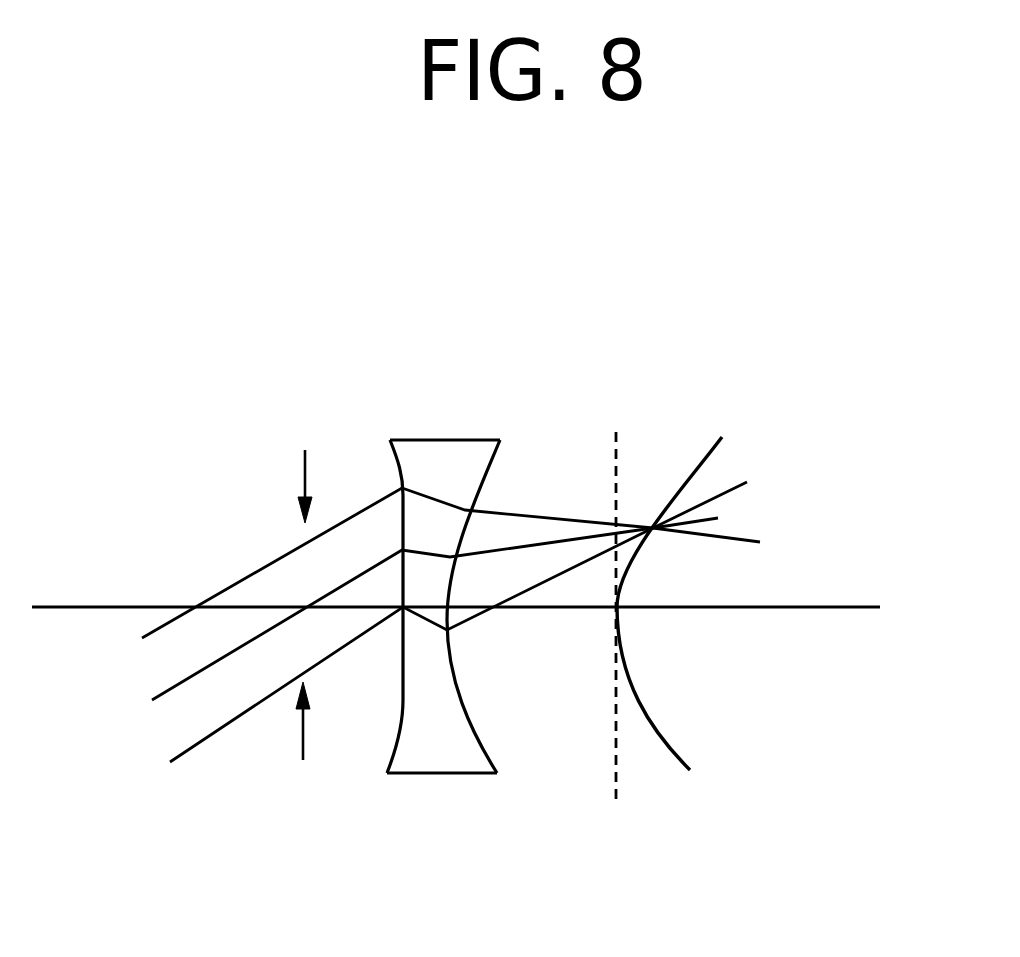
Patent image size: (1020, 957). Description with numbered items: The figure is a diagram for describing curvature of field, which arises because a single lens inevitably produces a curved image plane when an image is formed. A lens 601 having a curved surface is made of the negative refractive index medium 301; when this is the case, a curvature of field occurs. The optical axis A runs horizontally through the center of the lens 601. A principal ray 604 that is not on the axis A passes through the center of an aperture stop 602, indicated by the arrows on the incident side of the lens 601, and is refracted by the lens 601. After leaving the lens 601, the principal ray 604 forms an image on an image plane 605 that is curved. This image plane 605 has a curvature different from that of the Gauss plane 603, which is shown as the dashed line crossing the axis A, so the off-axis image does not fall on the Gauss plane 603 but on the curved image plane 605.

The optical axis A is at (83, 607).
The negative refractive index medium 301 is at (443, 605).
The lens 601 is at (452, 440).
The aperture stop 602 is at (303, 737).
The Gauss plane 603 is at (616, 757).
The principal ray 604 is at (173, 688).
The image plane 605 is at (702, 462).